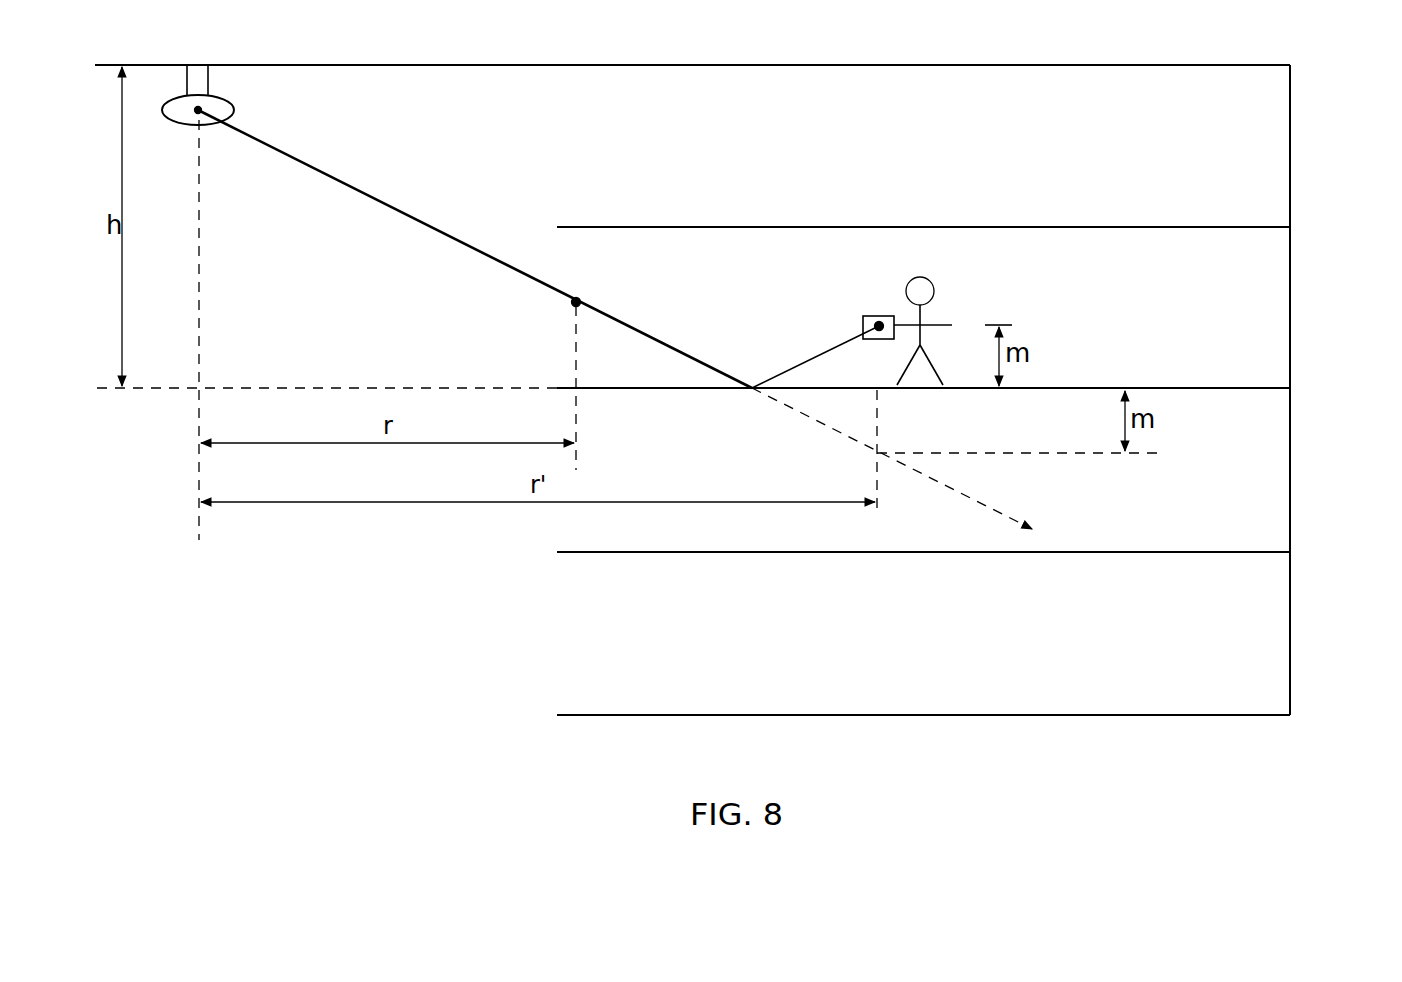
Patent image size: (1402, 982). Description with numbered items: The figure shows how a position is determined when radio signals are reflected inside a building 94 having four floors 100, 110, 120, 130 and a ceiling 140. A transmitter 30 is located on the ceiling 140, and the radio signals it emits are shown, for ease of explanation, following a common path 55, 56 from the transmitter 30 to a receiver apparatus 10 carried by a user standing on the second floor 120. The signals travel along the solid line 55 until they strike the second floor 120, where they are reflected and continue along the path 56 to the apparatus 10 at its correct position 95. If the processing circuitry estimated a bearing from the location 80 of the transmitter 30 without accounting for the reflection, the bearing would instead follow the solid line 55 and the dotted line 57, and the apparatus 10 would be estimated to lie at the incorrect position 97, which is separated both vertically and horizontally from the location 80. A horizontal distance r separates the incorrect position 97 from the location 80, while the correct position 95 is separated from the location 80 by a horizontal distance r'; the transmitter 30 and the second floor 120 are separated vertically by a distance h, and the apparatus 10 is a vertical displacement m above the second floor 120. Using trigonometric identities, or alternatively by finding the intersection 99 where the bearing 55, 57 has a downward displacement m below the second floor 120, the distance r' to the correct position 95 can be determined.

The receiver apparatus 10 is at (862, 324).
The transmitter 30 is at (245, 109).
The common path (solid line) 55 is at (405, 213).
The common path (reflected portion) 56 is at (785, 371).
The dotted line 57 is at (937, 483).
The location of the transmitter 80 is at (200, 113).
The building 94 is at (1305, 482).
The position 95 is at (878, 336).
The incorrect position 97 is at (583, 301).
The intersection 99 is at (880, 452).
The floor 100 is at (1213, 717).
The floor 110 is at (1213, 554).
The second floor 120 is at (1213, 390).
The floor 130 is at (1213, 229).
The ceiling 140 is at (1213, 67).